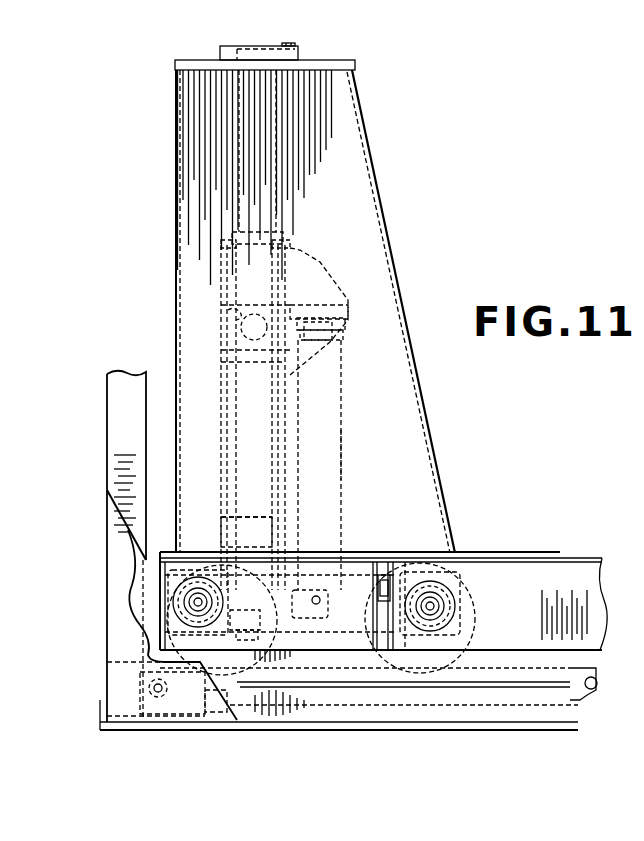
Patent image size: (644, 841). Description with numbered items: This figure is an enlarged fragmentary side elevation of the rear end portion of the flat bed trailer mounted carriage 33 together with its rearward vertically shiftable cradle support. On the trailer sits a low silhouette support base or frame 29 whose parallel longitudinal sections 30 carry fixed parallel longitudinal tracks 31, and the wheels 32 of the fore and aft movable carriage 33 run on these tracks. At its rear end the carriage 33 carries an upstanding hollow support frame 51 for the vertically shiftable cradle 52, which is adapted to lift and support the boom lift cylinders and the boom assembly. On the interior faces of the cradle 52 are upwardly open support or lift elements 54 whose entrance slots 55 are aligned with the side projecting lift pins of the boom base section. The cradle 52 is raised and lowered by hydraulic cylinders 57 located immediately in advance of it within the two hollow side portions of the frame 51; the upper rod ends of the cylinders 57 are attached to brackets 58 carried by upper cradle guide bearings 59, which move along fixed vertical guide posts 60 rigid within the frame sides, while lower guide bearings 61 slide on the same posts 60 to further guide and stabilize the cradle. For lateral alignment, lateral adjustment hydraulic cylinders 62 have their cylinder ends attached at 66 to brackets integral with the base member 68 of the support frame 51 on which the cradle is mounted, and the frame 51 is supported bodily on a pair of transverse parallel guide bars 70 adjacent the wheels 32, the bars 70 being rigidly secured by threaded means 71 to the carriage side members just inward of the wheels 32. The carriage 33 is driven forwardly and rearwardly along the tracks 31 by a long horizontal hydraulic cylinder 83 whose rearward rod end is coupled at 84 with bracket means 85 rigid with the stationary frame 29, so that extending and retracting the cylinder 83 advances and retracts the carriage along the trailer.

The support base or frame 29 is at (104, 686).
The parallel longitudinal sections 30 is at (568, 720).
The parallel longitudinal tracks 31 is at (580, 664).
The wheels 32 is at (255, 662).
The carriage 33 is at (523, 539).
The support frame 51 is at (345, 123).
The cradle 52 is at (333, 392).
The support or lift elements 54 is at (225, 350).
The entrance slots 55 is at (240, 320).
The hydraulic cylinders 57 is at (343, 457).
The brackets 58 is at (305, 277).
The upper cradle guide bearings 59 is at (230, 272).
The guide posts 60 is at (237, 78).
The lower guide bearings 61 is at (225, 537).
The lateral adjustment hydraulic cylinders 62 is at (405, 560).
The cylinder end attachment 66 is at (372, 572).
The base member 68 is at (362, 618).
The transverse guide bars 70 is at (215, 603).
The threaded means 71 is at (175, 604).
The horizontal hydraulic cylinder 83 is at (586, 684).
The rod end coupling 84 is at (185, 720).
The bracket means 85 is at (152, 700).